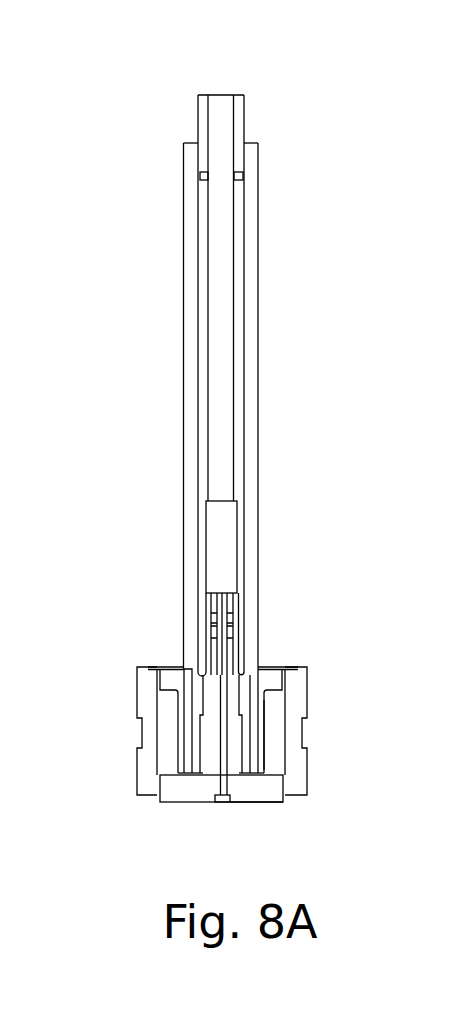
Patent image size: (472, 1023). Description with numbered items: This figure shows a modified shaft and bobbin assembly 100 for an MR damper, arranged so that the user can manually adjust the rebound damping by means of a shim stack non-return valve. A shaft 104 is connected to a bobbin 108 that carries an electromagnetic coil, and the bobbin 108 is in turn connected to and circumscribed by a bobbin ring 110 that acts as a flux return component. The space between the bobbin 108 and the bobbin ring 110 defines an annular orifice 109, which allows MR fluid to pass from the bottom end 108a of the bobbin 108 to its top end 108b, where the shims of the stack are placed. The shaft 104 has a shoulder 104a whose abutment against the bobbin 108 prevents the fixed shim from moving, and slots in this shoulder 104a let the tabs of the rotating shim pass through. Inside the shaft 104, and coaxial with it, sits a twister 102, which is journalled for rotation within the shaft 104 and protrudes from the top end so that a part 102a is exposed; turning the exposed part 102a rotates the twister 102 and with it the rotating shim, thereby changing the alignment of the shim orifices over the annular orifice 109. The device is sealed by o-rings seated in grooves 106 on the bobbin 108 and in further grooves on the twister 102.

The probe assembly 100 is at (79, 114).
The twister 102 is at (239, 304).
The exposed part of the twister 102a is at (250, 118).
The shaft 104 is at (262, 162).
The shoulder of the shaft 104a is at (190, 670).
The grooves 106 is at (232, 615).
The bobbin 108 is at (258, 702).
The bottom end of the bobbin 108a is at (268, 803).
The top end of the bobbin 108b is at (272, 678).
The annular orifice 109 is at (276, 738).
The bobbin ring 110 is at (312, 783).